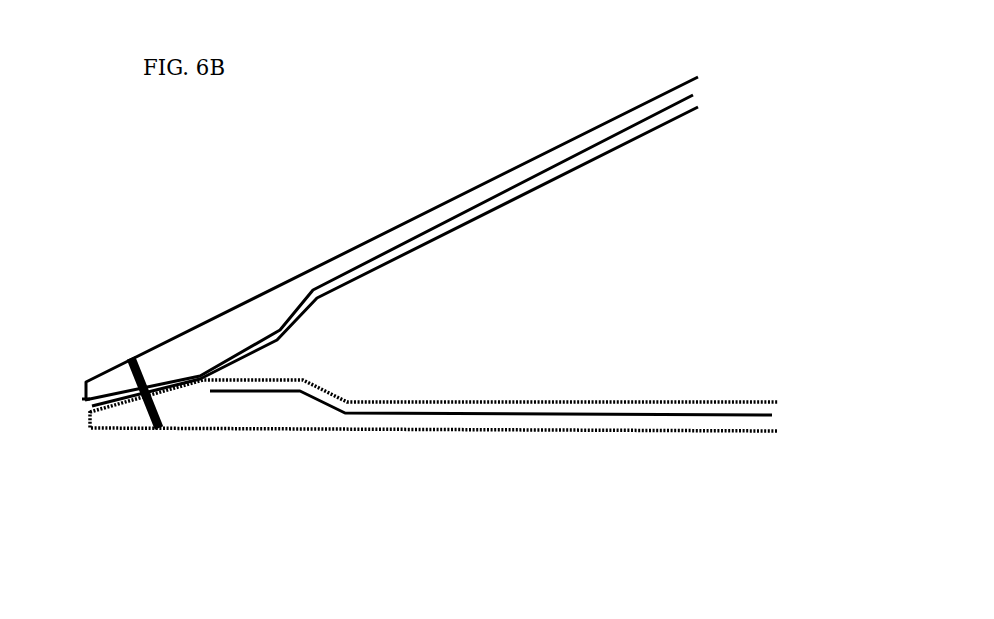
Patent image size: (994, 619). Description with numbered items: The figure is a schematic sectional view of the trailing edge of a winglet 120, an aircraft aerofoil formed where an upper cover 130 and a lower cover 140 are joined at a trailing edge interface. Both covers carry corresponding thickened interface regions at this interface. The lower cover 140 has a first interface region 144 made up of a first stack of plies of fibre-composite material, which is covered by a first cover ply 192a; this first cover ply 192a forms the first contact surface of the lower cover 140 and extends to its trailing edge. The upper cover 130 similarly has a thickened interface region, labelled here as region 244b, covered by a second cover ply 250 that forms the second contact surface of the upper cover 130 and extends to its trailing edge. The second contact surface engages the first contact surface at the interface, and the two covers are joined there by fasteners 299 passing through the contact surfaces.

The winglet 120 is at (578, 76).
The upper cover 130 is at (408, 221).
The arm inner layer 244b is at (203, 354).
The second cover ply 250 is at (495, 209).
The fasteners 299 is at (137, 357).
The lower cover 140 is at (513, 430).
The first cover ply 192a is at (715, 400).
The first interface region 144 is at (247, 411).